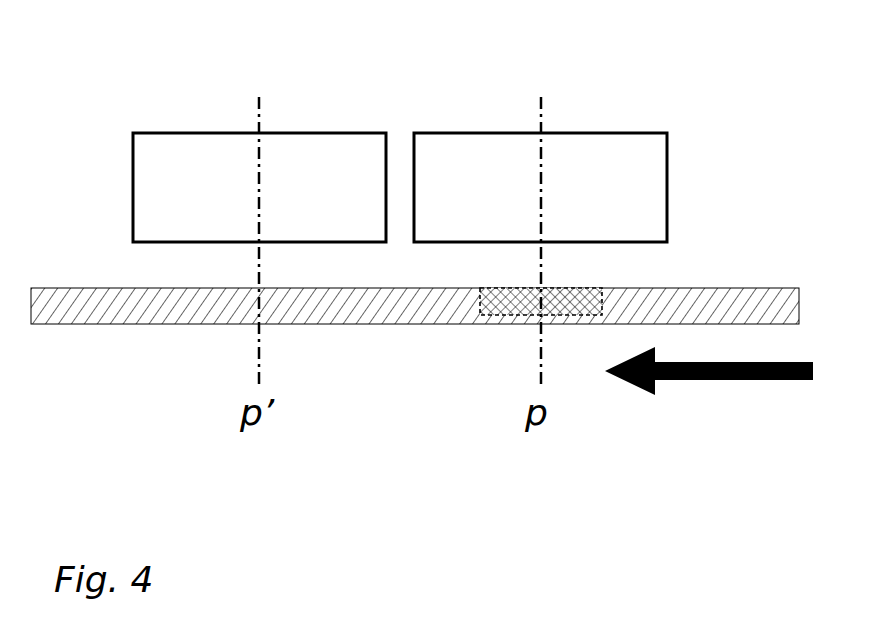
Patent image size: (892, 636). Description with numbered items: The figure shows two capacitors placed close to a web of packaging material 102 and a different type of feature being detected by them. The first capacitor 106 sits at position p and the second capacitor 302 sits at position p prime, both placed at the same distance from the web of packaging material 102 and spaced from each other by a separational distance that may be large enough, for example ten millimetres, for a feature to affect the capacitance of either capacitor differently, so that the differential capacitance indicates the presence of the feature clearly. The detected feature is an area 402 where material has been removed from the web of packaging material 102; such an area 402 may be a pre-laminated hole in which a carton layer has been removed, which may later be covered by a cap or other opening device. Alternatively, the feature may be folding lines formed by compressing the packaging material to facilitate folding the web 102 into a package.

The web of packaging material 102 is at (733, 288).
The first capacitor 106 is at (487, 133).
The second capacitor 302 is at (220, 133).
The area 402 is at (505, 317).